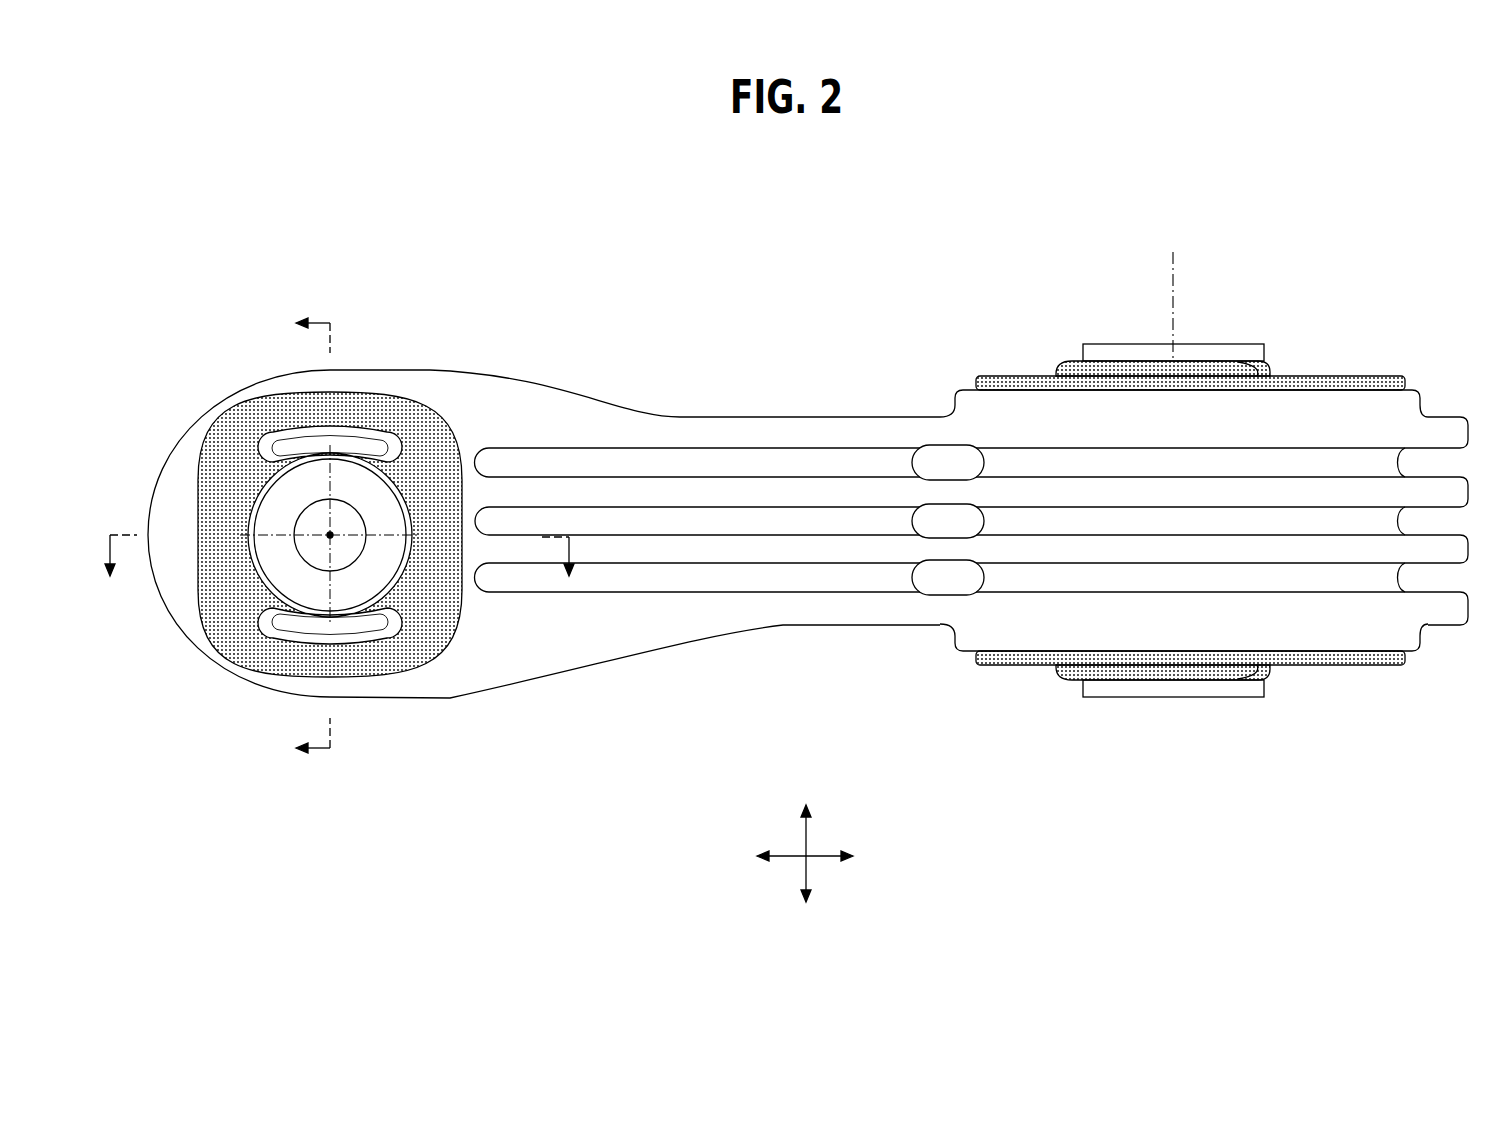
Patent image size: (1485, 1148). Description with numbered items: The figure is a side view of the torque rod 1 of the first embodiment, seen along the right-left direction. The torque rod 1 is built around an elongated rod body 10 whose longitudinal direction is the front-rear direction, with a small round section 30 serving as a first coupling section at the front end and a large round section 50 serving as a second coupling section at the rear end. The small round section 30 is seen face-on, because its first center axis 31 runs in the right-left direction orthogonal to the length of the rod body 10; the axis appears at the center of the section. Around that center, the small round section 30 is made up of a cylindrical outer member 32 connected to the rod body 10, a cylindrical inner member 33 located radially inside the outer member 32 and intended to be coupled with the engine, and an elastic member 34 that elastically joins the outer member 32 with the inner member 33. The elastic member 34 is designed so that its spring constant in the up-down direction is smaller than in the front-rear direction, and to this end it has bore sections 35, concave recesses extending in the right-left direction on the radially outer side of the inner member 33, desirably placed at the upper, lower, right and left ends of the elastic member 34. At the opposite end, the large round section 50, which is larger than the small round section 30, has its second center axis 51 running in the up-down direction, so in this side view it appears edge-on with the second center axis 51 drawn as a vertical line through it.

The torque rod 1 is at (300, 222).
The rod body 10 is at (812, 415).
The small round section 30 is at (243, 302).
The first center axis 31 is at (324, 540).
The outer member 32 is at (175, 512).
The inner member 33 is at (282, 510).
The elastic member 34 is at (223, 510).
The bore sections 35 is at (377, 447).
The large round section 50 is at (1352, 328).
The second center axis 51 is at (1170, 266).